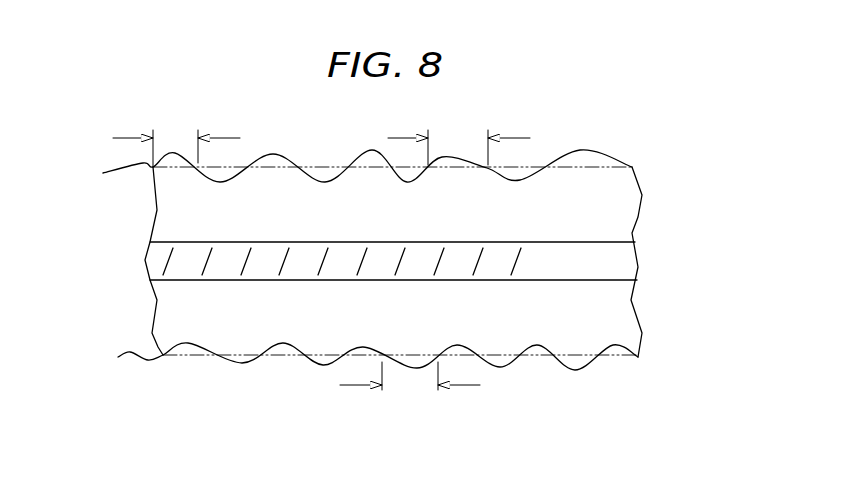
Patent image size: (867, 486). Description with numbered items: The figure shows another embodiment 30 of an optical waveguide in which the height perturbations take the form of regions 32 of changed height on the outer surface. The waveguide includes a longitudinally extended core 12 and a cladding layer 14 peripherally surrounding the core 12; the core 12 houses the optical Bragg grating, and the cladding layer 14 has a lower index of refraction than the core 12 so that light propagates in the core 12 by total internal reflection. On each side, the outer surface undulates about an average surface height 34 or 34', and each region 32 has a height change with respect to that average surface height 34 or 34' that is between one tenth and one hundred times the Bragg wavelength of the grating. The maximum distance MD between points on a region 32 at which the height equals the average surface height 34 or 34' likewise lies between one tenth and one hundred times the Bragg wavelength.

The waveguide embodiment 30 is at (600, 126).
The core 12 is at (658, 264).
The cladding layer 14 is at (660, 206).
The regions of changed height 32 is at (273, 153).
The average surface height 34 is at (353, 173).
The average surface height 34' is at (360, 357).
The maximum distance MD is at (120, 138).